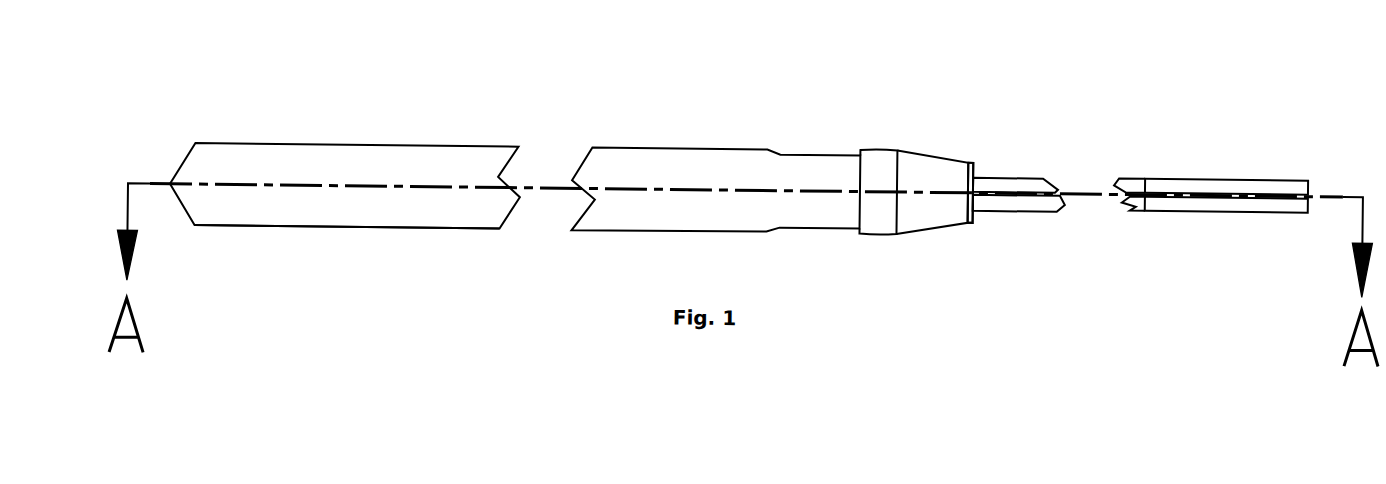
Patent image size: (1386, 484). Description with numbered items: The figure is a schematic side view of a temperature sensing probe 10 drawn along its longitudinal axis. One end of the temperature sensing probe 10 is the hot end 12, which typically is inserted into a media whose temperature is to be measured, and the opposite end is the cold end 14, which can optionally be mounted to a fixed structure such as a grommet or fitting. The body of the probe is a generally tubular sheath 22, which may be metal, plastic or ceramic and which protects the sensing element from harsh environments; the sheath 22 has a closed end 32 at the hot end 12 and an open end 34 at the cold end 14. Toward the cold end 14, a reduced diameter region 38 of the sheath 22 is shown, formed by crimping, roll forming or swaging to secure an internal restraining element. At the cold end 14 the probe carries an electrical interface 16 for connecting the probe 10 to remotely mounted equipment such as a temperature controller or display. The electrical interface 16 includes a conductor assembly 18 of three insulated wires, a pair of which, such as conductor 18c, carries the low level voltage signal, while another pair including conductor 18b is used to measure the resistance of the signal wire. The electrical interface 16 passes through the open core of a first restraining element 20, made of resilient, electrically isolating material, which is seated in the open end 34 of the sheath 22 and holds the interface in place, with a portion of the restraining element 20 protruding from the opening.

The temperature sensing probe 10 is at (636, 74).
The hot end 12 is at (200, 128).
The cold end 14 is at (930, 70).
The electrical interface 16 is at (1022, 148).
The conductor assembly 18 is at (1023, 204).
The conductor 18b is at (1185, 201).
The conductor 18c is at (1185, 167).
The first restraining element 20 is at (972, 216).
The sheath 22 is at (350, 226).
The closed end 32 is at (240, 306).
The open end 34 is at (985, 150).
The reduced diameter region 38 is at (818, 137).